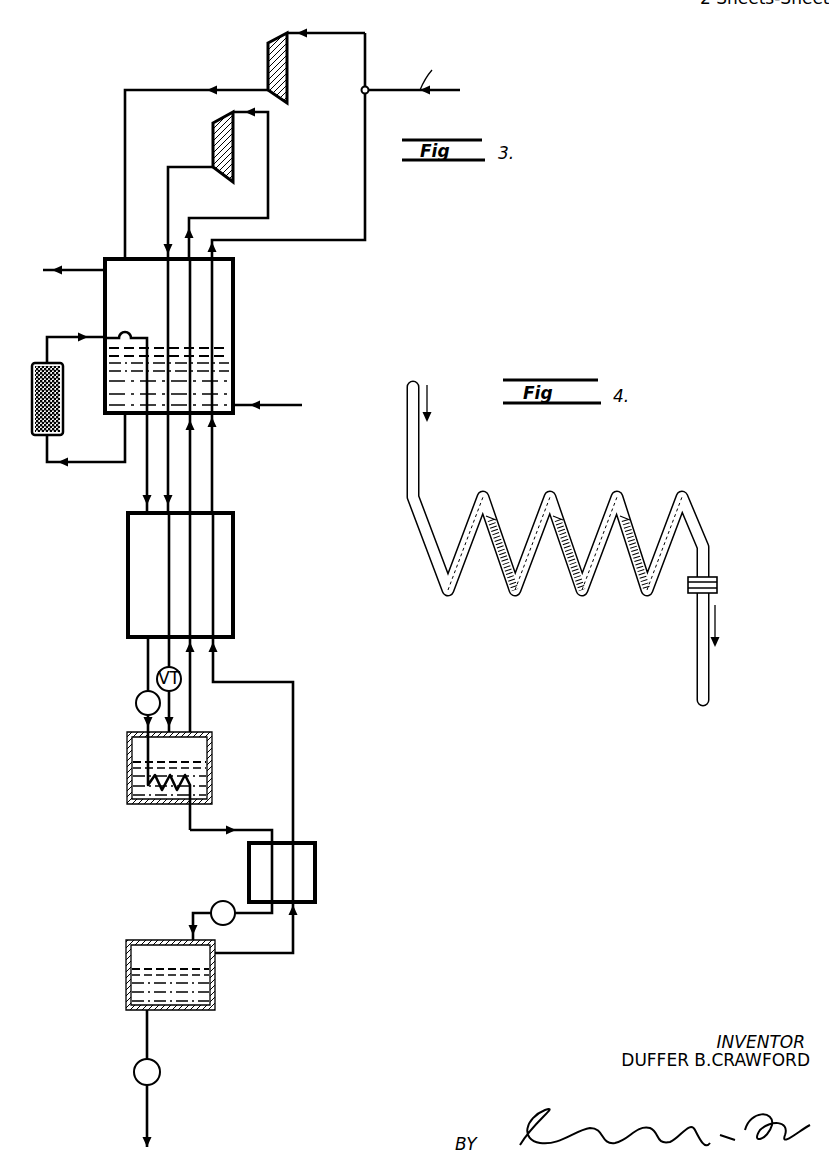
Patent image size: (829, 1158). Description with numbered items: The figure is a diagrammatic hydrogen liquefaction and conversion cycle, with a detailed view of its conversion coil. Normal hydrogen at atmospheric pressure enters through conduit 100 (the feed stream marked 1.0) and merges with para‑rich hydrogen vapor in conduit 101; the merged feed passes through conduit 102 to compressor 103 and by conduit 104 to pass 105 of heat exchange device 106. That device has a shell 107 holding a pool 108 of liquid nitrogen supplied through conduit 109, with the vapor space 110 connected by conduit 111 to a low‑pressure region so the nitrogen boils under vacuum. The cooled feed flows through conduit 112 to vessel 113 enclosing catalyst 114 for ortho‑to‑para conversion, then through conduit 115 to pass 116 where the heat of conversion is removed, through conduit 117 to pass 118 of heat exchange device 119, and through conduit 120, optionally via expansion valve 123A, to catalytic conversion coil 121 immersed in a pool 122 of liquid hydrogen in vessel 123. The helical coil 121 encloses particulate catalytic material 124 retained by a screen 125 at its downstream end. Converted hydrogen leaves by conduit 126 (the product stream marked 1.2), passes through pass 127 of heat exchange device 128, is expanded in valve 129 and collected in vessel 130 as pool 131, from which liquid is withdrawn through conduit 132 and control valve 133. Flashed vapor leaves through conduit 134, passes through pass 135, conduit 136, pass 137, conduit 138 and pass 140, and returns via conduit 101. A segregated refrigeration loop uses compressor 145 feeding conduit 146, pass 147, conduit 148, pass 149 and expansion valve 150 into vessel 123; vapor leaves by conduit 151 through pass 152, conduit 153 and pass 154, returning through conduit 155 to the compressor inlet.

In FIG. 3, the conduit 100 is at (408, 90).
In FIG. 3, the feed stream 1.0 is at (435, 70).
In FIG. 3, the conduit 101 is at (365, 150).
In FIG. 3, the conduit 102 is at (309, 33).
In FIG. 3, the compressor 103 is at (270, 40).
In FIG. 3, the conduit 104 is at (125, 156).
In FIG. 3, the pass 105 is at (107, 300).
In FIG. 3, the heat exchange device 106 is at (240, 312).
In FIG. 3, the shell 107 is at (235, 333).
In FIG. 3, the pool of liquid refrigerant 108 is at (222, 375).
In FIG. 3, the conduit 109 is at (285, 405).
In FIG. 3, the vapor space 110 is at (222, 281).
In FIG. 3, the conduit 111 is at (80, 270).
In FIG. 3, the conduit 112 is at (63, 463).
In FIG. 3, the vessel 113 is at (63, 400).
In FIG. 3, the catalyst 114 is at (58, 378).
In FIG. 3, the conduit 115 is at (52, 337).
In FIG. 3, the pass 116 is at (145, 400).
In FIG. 3, the conduit 117 is at (147, 478).
In FIG. 3, the pass 118 is at (147, 530).
In FIG. 3, the heat exchange device 119 is at (122, 560).
In FIG. 3, the conduit 120 is at (147, 675).
In FIG. 4, the conduit 120 is at (408, 467).
In FIG. 3, the catalytic conversion coil 121 is at (150, 790).
In FIG. 4, the catalytic conversion coil 121 is at (542, 488).
In FIG. 3, the pool of liquid refrigerant 122 is at (200, 772).
In FIG. 3, the vessel 123 is at (127, 760).
In FIG. 3, the expansion valve 123A is at (136, 703).
In FIG. 4, the catalytic material 124 is at (512, 575).
In FIG. 4, the screen 125 is at (689, 588).
In FIG. 3, the conduit 126 is at (200, 835).
In FIG. 4, the conduit 126 is at (712, 685).
In FIG. 3, the product stream 1.2 is at (225, 830).
In FIG. 3, the pass 127 is at (272, 862).
In FIG. 3, the heat exchange device 128 is at (322, 861).
In FIG. 3, the valve 129 is at (233, 920).
In FIG. 3, the vessel 130 is at (216, 985).
In FIG. 3, the pool 131 is at (208, 997).
In FIG. 3, the conduit 132 is at (149, 1035).
In FIG. 3, the control valve 133 is at (133, 1073).
In FIG. 3, the conduit 134 is at (293, 960).
In FIG. 3, the pass 135 is at (294, 877).
In FIG. 3, the conduit 136 is at (294, 710).
In FIG. 3, the pass 137 is at (213, 567).
In FIG. 3, the conduit 138 is at (214, 462).
In FIG. 3, the pass 140 is at (212, 300).
In FIG. 3, the compressor 145 is at (213, 133).
In FIG. 3, the conduit 146 is at (207, 168).
In FIG. 3, the pass 147 is at (165, 262).
In FIG. 3, the conduit 148 is at (167, 447).
In FIG. 3, the pass 149 is at (169, 597).
In FIG. 3, the valve 150 is at (190, 676).
In FIG. 3, the conduit 151 is at (191, 712).
In FIG. 3, the pass 152 is at (190, 551).
In FIG. 3, the conduit 153 is at (190, 455).
In FIG. 3, the pass 154 is at (190, 343).
In FIG. 3, the conduit 155 is at (272, 210).